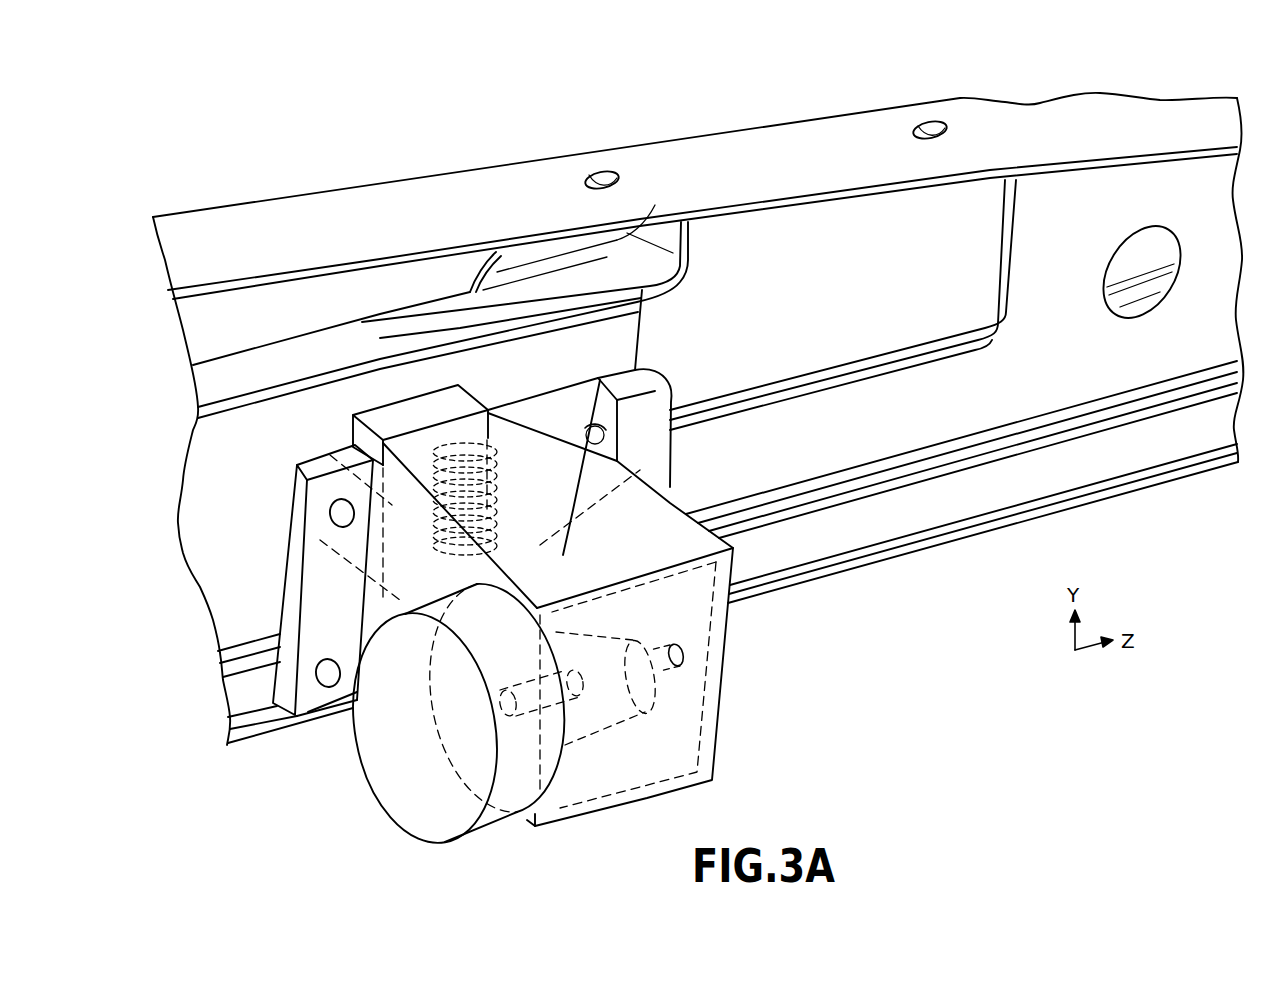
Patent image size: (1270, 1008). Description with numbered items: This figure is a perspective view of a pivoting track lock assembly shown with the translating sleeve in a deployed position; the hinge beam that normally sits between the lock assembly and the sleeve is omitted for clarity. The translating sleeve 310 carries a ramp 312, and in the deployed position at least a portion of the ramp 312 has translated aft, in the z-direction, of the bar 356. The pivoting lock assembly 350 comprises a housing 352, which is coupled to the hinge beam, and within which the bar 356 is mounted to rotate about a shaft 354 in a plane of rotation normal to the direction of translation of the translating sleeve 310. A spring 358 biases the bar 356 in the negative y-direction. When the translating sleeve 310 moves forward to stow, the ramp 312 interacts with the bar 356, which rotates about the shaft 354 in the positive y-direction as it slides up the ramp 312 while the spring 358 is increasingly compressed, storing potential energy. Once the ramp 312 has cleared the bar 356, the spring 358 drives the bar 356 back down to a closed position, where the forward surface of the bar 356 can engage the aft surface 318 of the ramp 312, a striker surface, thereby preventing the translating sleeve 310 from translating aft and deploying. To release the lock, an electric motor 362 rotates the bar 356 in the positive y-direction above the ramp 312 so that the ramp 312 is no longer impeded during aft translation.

The translating sleeve 310 is at (1018, 120).
The ramp 312 is at (650, 427).
The aft surface 318 is at (672, 453).
The pivoting lock assembly 350 is at (608, 630).
The housing 352 is at (707, 798).
The shaft 354 is at (668, 667).
The bar 356 is at (640, 620).
The spring 358 is at (490, 525).
The electric motor 362 is at (452, 810).